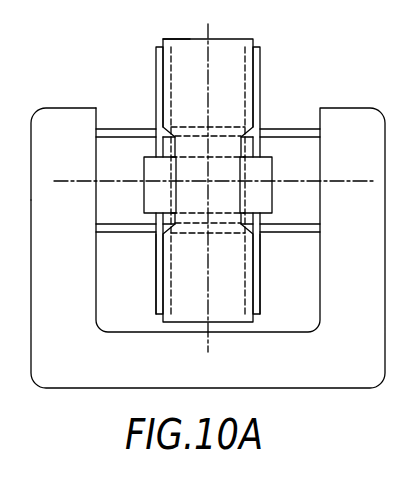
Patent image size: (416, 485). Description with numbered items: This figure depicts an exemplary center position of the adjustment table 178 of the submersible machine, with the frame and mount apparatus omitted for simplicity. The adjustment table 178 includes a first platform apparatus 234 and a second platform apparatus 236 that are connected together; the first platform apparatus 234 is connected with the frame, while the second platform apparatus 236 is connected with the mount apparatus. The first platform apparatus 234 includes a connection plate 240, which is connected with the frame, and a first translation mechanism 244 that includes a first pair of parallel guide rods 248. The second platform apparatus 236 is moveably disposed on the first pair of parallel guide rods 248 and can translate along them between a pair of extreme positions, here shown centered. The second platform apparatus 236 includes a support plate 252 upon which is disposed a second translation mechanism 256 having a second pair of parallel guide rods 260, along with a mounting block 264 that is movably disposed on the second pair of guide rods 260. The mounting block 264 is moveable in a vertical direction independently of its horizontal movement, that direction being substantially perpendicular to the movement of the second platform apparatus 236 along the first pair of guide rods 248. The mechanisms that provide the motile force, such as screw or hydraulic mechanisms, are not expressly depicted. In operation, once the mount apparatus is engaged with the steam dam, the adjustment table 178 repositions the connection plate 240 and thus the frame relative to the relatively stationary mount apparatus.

The adjustment table 178 is at (346, 394).
The first platform apparatus 234 is at (63, 100).
The second platform apparatus 236 is at (272, 55).
The connection plate 240 is at (105, 389).
The first translation mechanism 244 is at (294, 242).
The first pair of parallel guide rods 248 is at (108, 224).
The support plate 252 is at (177, 38).
The second translation mechanism 256 is at (272, 93).
The second pair of parallel guide rods 260 is at (156, 293).
The mounting block 264 is at (272, 182).